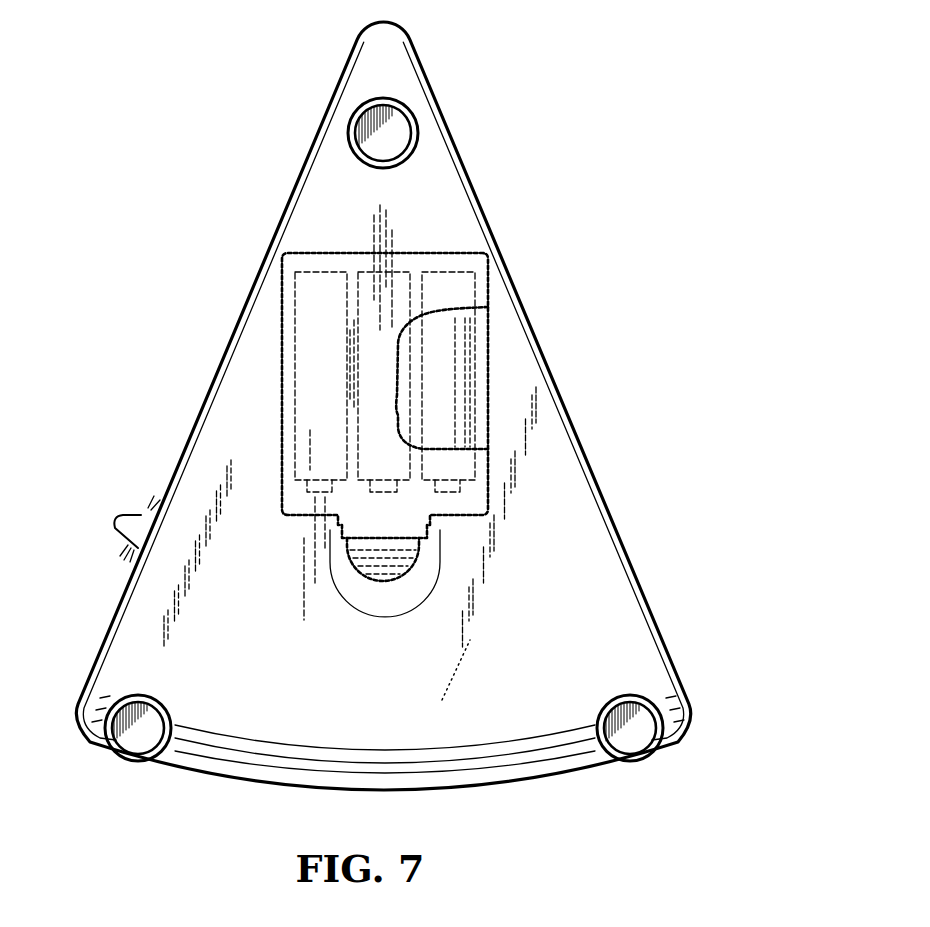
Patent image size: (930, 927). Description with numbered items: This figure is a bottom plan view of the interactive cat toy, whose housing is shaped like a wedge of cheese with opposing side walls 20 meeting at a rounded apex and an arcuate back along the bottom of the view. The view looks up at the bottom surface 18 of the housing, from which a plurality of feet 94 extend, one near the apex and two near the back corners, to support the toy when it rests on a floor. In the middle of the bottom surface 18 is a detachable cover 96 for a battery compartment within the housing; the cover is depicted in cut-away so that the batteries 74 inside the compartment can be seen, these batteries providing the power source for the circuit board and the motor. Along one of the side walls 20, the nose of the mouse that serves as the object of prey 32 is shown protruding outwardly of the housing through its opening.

The bottom surface 18 is at (583, 528).
The side walls 20 is at (249, 297).
The object of prey 32 is at (137, 525).
The battery 74 is at (450, 410).
The feet 94 is at (395, 130).
The detachable cover 96 is at (310, 492).